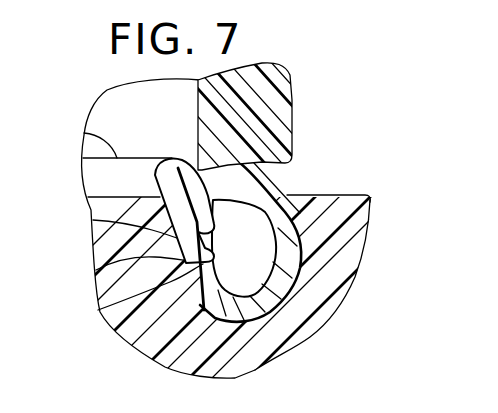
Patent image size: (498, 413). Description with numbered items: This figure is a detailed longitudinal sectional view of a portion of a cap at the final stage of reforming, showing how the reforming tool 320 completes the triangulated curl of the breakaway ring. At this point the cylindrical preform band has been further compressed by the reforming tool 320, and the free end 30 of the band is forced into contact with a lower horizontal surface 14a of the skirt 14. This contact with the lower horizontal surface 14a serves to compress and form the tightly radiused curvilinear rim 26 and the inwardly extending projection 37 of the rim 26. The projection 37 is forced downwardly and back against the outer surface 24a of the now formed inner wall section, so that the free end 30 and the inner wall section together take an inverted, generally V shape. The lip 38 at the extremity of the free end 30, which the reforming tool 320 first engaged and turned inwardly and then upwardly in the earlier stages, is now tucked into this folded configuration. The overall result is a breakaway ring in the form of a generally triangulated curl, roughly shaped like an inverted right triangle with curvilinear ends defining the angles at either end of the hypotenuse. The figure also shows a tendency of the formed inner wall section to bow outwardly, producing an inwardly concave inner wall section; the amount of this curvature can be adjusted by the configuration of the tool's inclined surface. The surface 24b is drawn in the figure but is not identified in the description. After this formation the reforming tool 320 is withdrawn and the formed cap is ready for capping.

The skirt 14 is at (294, 111).
The lower horizontal surface 14a is at (262, 186).
The curvilinear rim 26 is at (86, 133).
The free end 30 is at (186, 158).
The inwardly extending projection 37 is at (320, 196).
The lip 38 is at (93, 220).
The outer surface 24a is at (96, 270).
The body portion b 24b is at (100, 309).
The reforming tool 320 is at (343, 301).